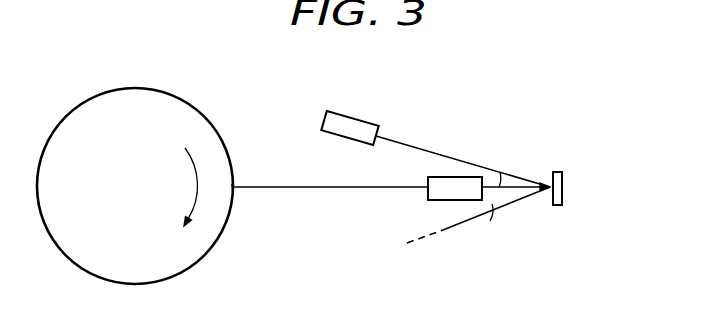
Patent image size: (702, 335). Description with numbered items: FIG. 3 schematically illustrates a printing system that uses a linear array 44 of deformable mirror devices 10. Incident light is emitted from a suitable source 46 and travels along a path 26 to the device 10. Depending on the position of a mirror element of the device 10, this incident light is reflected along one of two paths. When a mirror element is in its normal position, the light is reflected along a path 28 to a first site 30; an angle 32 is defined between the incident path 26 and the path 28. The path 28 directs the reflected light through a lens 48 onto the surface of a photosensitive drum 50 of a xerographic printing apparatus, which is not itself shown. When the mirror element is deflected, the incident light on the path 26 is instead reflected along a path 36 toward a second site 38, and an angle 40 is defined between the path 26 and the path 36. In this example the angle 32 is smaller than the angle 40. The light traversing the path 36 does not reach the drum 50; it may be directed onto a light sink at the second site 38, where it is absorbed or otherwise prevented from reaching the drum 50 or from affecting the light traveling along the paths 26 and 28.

The device 10 is at (500, 88).
The photosensitive drum 50 is at (104, 92).
The first site 30 is at (233, 184).
The path 28 is at (285, 188).
The source 46 is at (353, 117).
The path 26 is at (417, 148).
The angle 32 is at (500, 172).
The lens 48 is at (426, 180).
The linear array 44 is at (563, 196).
The angle 40 is at (492, 204).
The path 36 is at (428, 237).
The second site 38 is at (373, 244).